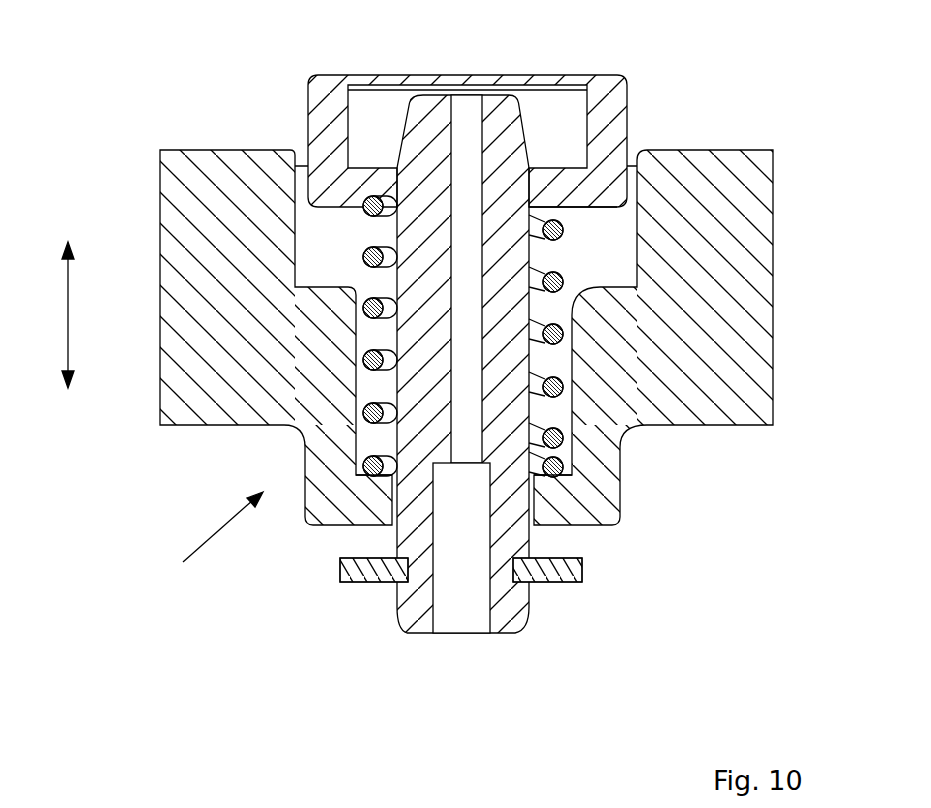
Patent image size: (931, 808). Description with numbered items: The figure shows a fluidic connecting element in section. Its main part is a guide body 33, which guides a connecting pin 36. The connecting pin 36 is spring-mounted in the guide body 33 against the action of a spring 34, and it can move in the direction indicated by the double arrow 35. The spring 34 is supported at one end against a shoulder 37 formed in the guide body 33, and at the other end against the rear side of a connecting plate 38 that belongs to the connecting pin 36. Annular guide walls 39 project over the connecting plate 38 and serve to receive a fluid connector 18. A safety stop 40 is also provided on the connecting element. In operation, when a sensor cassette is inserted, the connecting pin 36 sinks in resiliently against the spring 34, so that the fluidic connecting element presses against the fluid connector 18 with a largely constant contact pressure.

The fluid connector 18 is at (205, 547).
The guide body 33 is at (750, 220).
The spring 34 is at (363, 250).
The double arrow 35 is at (50, 315).
The connecting pin 36 is at (503, 488).
The shoulder 37 is at (372, 474).
The connecting plate 38 is at (568, 195).
The annular guide walls 39 is at (347, 90).
The safety stop 40 is at (363, 580).